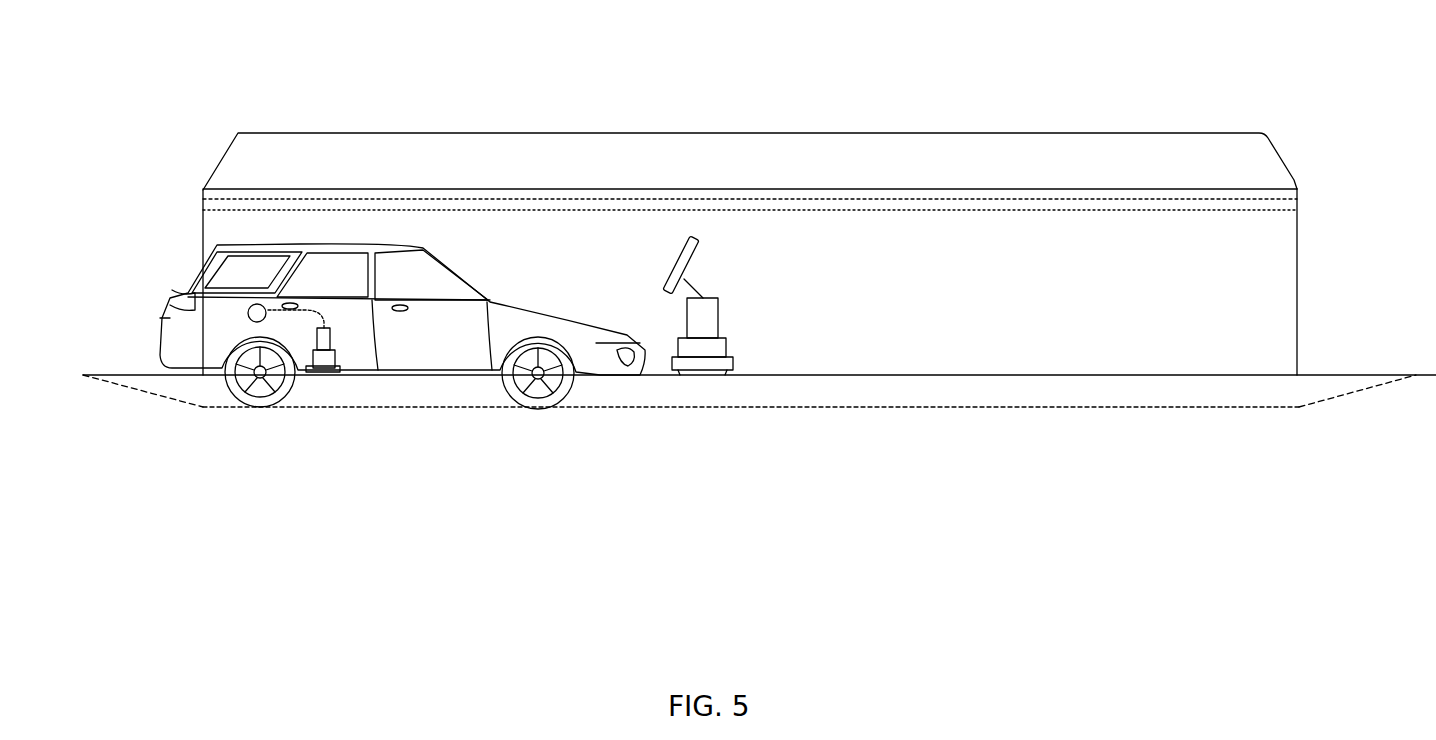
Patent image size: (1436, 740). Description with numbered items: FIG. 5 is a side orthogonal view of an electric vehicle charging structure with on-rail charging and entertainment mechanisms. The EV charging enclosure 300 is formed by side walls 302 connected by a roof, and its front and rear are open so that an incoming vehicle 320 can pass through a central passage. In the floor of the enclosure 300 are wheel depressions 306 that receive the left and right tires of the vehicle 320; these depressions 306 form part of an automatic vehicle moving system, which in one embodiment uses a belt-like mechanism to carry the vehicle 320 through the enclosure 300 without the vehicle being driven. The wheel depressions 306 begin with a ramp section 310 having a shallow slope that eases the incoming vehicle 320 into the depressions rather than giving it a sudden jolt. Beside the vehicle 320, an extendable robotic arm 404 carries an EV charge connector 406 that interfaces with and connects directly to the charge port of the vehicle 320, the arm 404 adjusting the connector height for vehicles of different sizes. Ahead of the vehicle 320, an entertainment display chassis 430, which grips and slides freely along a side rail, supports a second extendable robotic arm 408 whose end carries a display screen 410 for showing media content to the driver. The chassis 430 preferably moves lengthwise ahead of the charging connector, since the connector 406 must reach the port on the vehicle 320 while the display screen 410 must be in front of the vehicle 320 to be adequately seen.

The EV charging enclosure 300 is at (226, 102).
The side walls 302 is at (203, 238).
The wheel depressions 306 is at (918, 408).
The ramp section 310 is at (160, 393).
The vehicle 320 is at (397, 373).
The extendable robotic arm 404 is at (318, 374).
The EV charge connector 406 is at (248, 308).
The extendable robotic arm 408 is at (718, 313).
The display screen 410 is at (680, 257).
The entertainment display chassis 430 is at (700, 360).